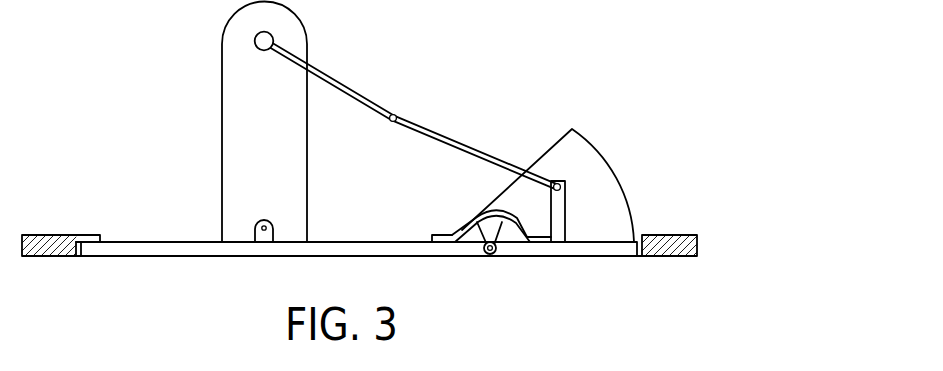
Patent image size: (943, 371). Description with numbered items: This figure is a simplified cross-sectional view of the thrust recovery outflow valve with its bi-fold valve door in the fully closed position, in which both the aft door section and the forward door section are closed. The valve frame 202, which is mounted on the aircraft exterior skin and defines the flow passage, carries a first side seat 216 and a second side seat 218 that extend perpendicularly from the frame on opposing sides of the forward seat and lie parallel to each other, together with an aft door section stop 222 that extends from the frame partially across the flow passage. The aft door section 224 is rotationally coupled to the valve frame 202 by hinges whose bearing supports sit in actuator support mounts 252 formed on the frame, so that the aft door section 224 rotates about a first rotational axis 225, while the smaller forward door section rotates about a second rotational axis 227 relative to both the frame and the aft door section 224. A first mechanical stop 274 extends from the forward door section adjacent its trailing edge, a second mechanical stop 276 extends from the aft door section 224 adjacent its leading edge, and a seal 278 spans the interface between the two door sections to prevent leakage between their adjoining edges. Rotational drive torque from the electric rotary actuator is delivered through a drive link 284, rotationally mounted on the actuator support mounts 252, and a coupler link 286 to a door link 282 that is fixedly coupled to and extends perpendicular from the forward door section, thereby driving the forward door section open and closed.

The valve frame 202 is at (678, 235).
The first side seat 216 is at (588, 174).
The second side seat 218 is at (575, 132).
The aft door section stop 222 is at (88, 235).
The aft door section 224 is at (342, 242).
The first rotational axis 225 is at (265, 232).
The second rotational axis 227 is at (490, 255).
The actuator support mount 252 is at (222, 70).
The first mechanical stop 274 is at (506, 238).
The second mechanical stop 276 is at (465, 231).
The seal 278 is at (482, 210).
The door link 282 is at (565, 198).
The drive link 284 is at (352, 91).
The coupler link 286 is at (455, 142).